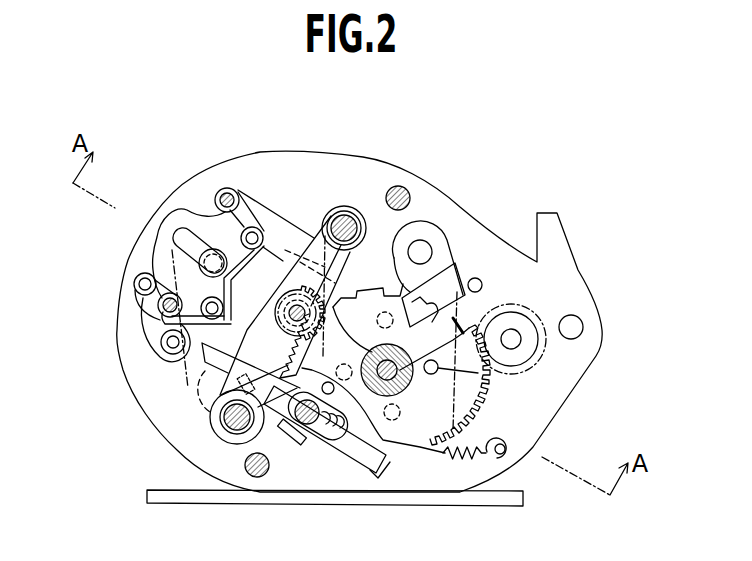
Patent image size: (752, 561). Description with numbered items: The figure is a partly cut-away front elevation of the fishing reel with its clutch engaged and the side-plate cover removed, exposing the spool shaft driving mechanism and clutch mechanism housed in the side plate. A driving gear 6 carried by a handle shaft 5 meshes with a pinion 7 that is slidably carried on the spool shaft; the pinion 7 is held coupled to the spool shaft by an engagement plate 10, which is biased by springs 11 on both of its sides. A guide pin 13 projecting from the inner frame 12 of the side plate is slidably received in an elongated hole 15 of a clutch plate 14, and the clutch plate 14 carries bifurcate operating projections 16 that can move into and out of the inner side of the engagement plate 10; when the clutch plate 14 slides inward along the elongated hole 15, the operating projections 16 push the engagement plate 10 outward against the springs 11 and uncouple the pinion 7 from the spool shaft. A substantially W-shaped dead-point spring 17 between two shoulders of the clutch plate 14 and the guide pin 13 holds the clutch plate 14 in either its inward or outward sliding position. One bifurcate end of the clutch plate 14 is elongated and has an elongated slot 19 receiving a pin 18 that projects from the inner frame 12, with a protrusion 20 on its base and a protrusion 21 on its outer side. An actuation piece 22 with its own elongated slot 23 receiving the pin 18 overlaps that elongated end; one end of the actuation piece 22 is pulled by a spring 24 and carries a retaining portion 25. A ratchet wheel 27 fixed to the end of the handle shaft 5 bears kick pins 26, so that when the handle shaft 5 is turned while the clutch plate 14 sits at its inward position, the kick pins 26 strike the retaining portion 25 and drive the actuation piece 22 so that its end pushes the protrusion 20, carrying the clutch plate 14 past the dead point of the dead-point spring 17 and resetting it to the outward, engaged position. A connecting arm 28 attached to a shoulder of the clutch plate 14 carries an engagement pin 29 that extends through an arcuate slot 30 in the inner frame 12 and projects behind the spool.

The handle shaft 5 is at (408, 386).
The driving gear 6 is at (338, 300).
The pinion 7 is at (283, 312).
The engagement plate 10 is at (297, 276).
The springs 11 is at (347, 209).
The inner frame 12 is at (477, 233).
The guide pin 13 is at (213, 249).
The clutch plate 14 is at (187, 216).
The elongated hole 15 is at (178, 236).
The operating projections 16 is at (288, 235).
The dead-point spring 17 is at (253, 207).
The pin 18 is at (313, 428).
The elongated slot 19 is at (272, 388).
The protrusion 20 is at (192, 405).
The protrusion 21 is at (288, 433).
The actuation piece 22 is at (357, 470).
The elongated slot 23 is at (343, 440).
The spring 24 is at (430, 463).
The retaining portion 25 is at (383, 440).
The kick pins 26 is at (484, 376).
The ratchet wheel 27 is at (383, 290).
The connecting arm 28 is at (150, 300).
The engagement pin 29 is at (137, 282).
The arcuate slot 30 is at (140, 338).